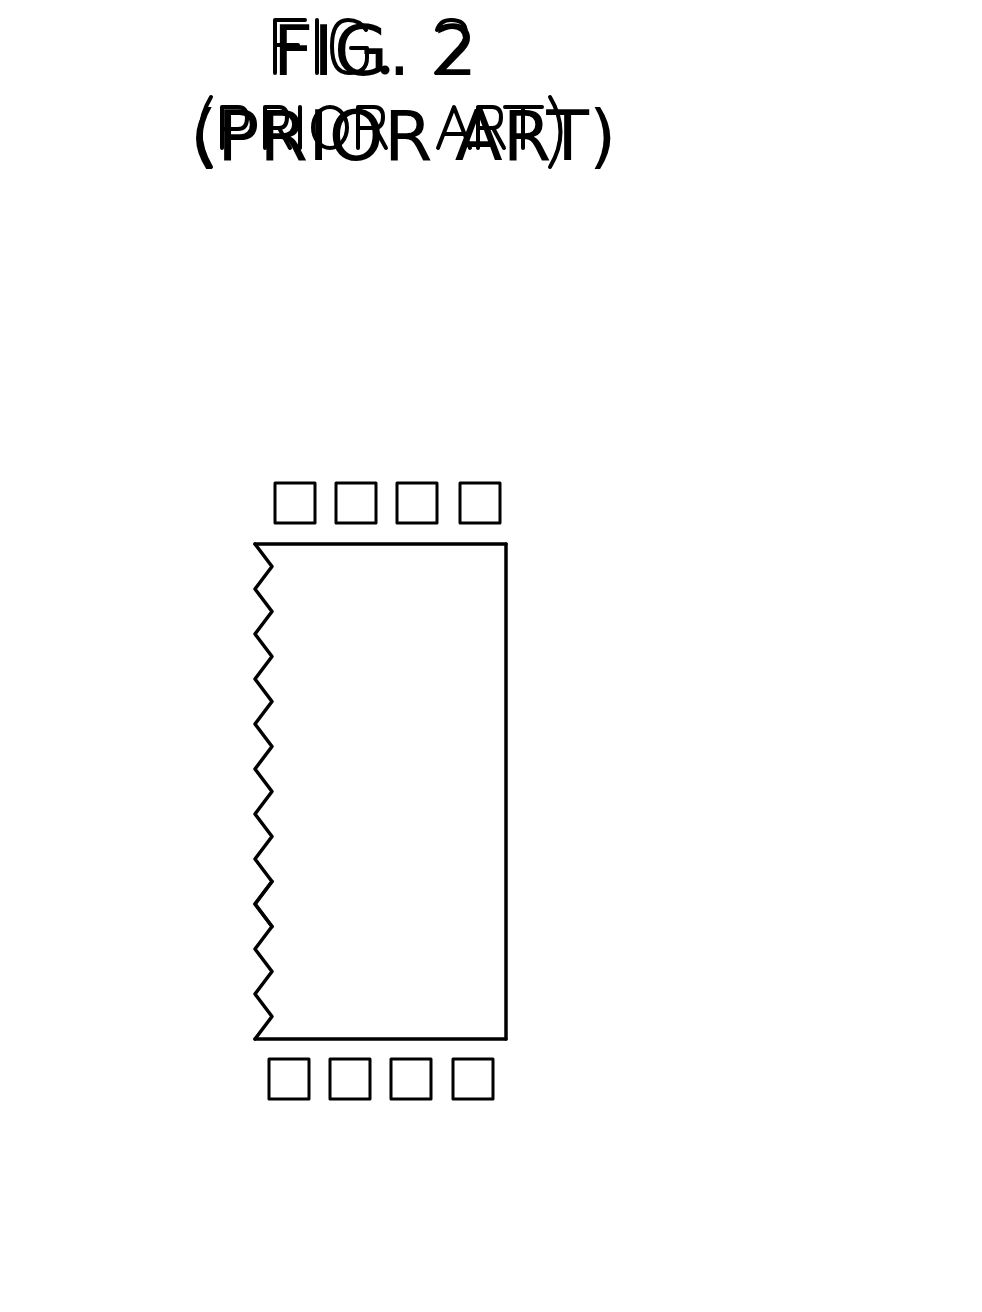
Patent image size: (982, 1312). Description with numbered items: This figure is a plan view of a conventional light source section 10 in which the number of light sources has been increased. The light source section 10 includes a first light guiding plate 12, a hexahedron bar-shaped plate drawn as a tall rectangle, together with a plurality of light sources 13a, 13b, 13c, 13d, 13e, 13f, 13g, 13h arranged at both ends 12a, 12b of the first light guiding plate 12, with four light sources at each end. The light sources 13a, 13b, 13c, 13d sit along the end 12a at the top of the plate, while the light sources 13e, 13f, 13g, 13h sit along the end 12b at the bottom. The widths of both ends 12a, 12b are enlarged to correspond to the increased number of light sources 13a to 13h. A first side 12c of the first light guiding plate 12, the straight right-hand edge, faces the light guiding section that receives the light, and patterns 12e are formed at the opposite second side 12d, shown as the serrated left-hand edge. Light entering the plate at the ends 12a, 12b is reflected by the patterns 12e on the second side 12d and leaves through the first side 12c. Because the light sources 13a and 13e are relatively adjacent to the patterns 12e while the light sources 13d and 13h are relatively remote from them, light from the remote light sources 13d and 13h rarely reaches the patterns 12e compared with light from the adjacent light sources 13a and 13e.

The light source section 10 is at (673, 404).
The first light guiding plate 12 is at (480, 835).
The end of the first light guiding plate 12a is at (268, 538).
The end of the first light guiding plate 12b is at (264, 1046).
The first side of the first light guiding plate 12c is at (508, 740).
The second side of the first light guiding plate 12d is at (240, 768).
The patterns 12e is at (255, 904).
The light source 13a is at (290, 497).
The light source 13b is at (355, 497).
The light source 13c is at (407, 499).
The light source 13d is at (486, 497).
The light source 13e is at (277, 1092).
The light source 13f is at (352, 1085).
The light source 13g is at (402, 1085).
The light source 13h is at (477, 1085).